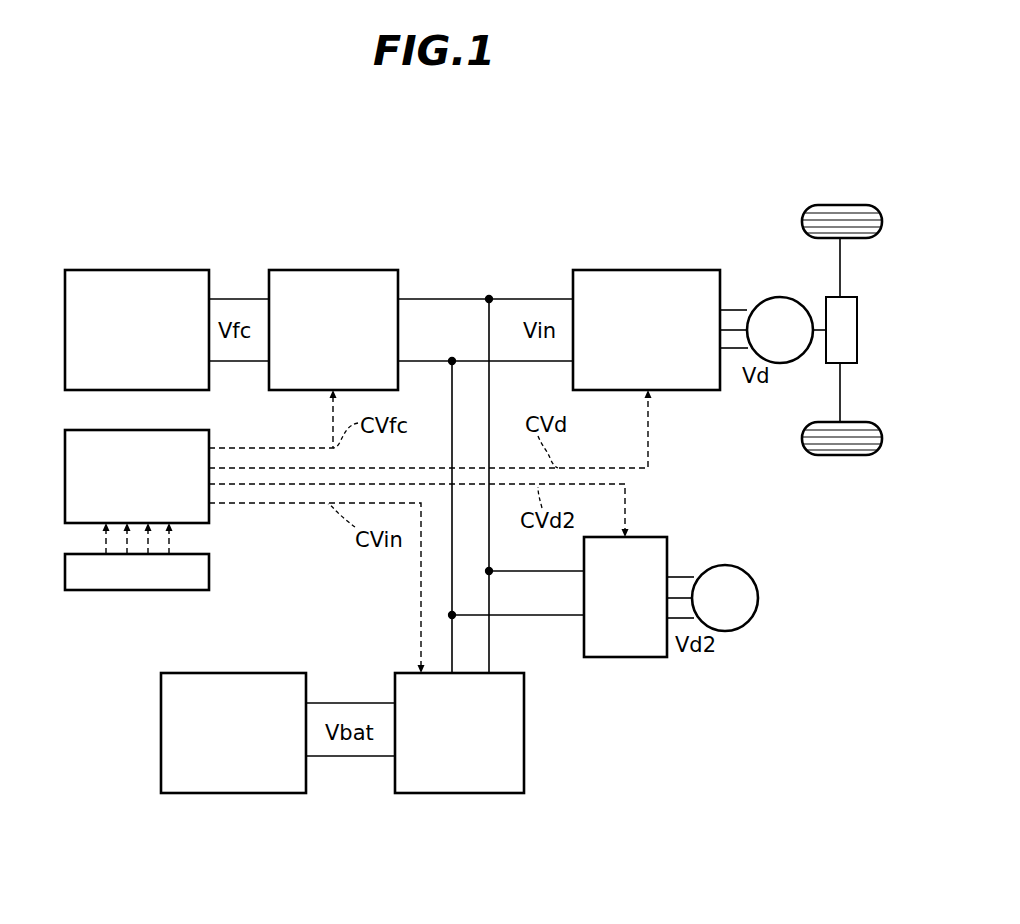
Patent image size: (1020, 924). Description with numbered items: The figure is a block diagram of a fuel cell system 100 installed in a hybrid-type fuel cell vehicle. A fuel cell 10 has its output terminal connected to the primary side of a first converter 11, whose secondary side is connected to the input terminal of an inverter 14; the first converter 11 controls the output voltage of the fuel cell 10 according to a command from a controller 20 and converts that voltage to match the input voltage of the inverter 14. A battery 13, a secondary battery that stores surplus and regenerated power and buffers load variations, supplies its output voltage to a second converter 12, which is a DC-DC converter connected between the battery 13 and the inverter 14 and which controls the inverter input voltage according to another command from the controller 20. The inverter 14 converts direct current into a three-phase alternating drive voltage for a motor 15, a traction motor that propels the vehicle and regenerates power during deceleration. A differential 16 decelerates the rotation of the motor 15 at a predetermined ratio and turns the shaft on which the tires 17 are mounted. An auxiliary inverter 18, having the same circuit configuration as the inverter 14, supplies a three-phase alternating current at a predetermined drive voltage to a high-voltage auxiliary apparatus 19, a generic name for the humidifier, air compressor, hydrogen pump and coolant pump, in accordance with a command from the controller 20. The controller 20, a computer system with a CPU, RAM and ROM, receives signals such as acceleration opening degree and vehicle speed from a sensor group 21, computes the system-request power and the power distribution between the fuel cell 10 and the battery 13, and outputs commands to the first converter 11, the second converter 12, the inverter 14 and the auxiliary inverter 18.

The fuel cell 10 is at (142, 270).
The first converter 11 is at (338, 270).
The second converter 12 is at (524, 743).
The battery 13 is at (248, 673).
The inverter 14 is at (646, 270).
The motor 15 is at (785, 297).
The differential 16 is at (857, 318).
The tires 17 is at (845, 205).
The auxiliary inverter 18 is at (646, 537).
The high-voltage auxiliary apparatus 19 is at (741, 574).
The controller 20 is at (209, 440).
The sensor group 21 is at (209, 573).
The fuel cell system 100 is at (698, 788).